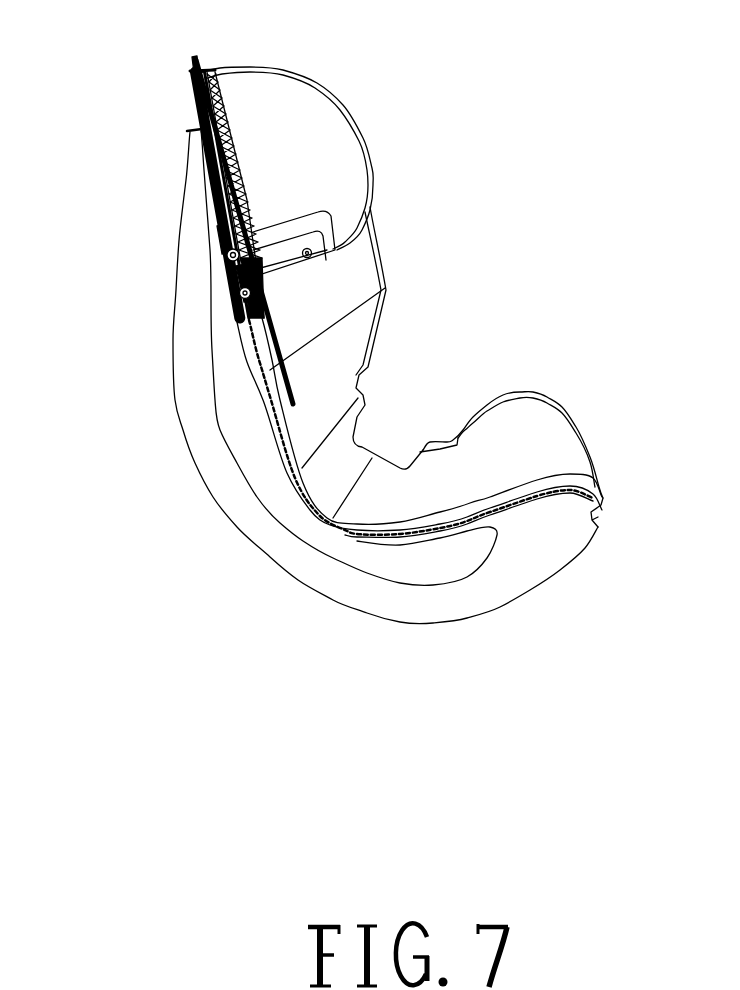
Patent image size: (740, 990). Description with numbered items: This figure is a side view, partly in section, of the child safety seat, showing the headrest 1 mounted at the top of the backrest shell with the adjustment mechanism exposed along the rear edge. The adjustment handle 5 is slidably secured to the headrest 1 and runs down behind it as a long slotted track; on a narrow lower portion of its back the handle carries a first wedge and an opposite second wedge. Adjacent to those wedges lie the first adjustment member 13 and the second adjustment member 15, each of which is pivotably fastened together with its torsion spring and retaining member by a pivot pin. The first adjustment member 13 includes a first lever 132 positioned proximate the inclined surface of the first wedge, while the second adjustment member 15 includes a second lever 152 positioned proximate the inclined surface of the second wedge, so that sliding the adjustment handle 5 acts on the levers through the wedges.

The headrest 1 is at (310, 132).
The adjustment handle 5 is at (215, 72).
The first lever 132 is at (222, 235).
The first adjustment member 13 is at (231, 256).
The second adjustment member 15 is at (234, 287).
The second lever 152 is at (238, 305).